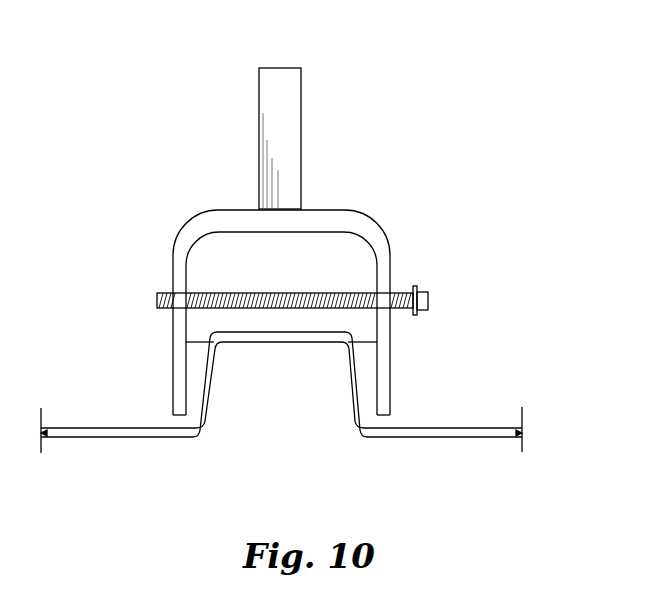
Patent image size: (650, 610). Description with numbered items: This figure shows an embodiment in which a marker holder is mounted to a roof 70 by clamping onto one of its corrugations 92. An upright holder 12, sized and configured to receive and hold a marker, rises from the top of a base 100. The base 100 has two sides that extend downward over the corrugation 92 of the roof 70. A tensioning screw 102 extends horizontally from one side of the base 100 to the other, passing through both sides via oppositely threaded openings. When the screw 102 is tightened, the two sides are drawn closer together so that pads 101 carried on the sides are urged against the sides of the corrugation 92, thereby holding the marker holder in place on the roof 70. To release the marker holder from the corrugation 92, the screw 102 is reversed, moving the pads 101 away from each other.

The holder 12 is at (301, 140).
The base 100 is at (180, 252).
The pads 101 is at (193, 383).
The tensioning screw 102 is at (428, 300).
The roof 70 is at (102, 437).
The corrugation 92 is at (283, 360).